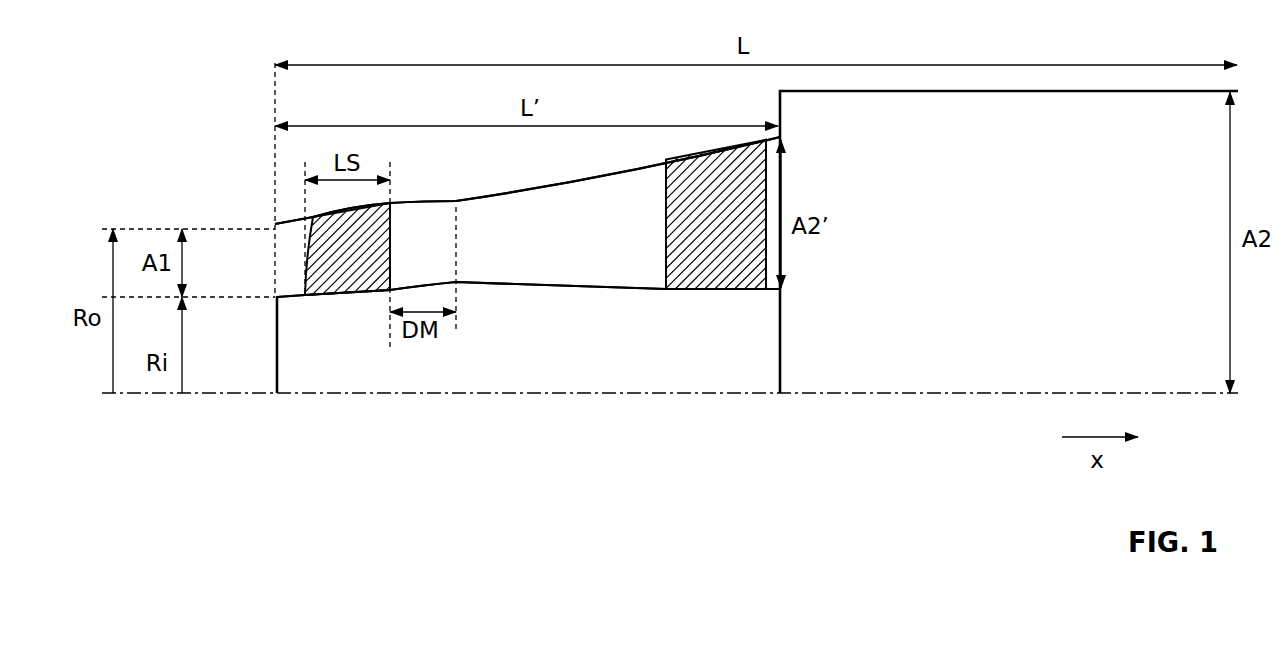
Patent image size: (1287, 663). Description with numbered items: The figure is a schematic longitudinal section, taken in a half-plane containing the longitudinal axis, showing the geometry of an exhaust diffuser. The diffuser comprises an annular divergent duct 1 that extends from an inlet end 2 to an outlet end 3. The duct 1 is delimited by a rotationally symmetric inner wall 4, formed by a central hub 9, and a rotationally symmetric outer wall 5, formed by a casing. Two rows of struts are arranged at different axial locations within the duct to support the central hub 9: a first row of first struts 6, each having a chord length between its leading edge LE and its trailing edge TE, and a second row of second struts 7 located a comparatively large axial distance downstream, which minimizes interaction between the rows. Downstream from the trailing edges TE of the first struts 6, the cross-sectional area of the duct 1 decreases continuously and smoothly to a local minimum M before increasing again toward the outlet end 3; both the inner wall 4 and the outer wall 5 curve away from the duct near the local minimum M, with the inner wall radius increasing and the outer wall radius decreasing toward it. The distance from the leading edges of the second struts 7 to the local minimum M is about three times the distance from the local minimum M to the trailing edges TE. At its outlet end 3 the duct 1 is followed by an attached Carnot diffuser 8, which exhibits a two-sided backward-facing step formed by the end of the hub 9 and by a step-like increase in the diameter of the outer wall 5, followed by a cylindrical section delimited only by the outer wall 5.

The annular divergent channel or duct 1 is at (527, 217).
The inlet end 2 is at (262, 309).
The outlet end 3 is at (796, 303).
The inner wall 4 is at (612, 290).
The outer wall 5 is at (505, 192).
The first struts 6 is at (345, 270).
The second struts 7 is at (703, 258).
The Carnot diffuser 8 is at (1009, 242).
The central hub 9 is at (412, 344).
The leading edge LE is at (309, 253).
The trailing edge TE is at (390, 233).
The local minimum M is at (456, 284).